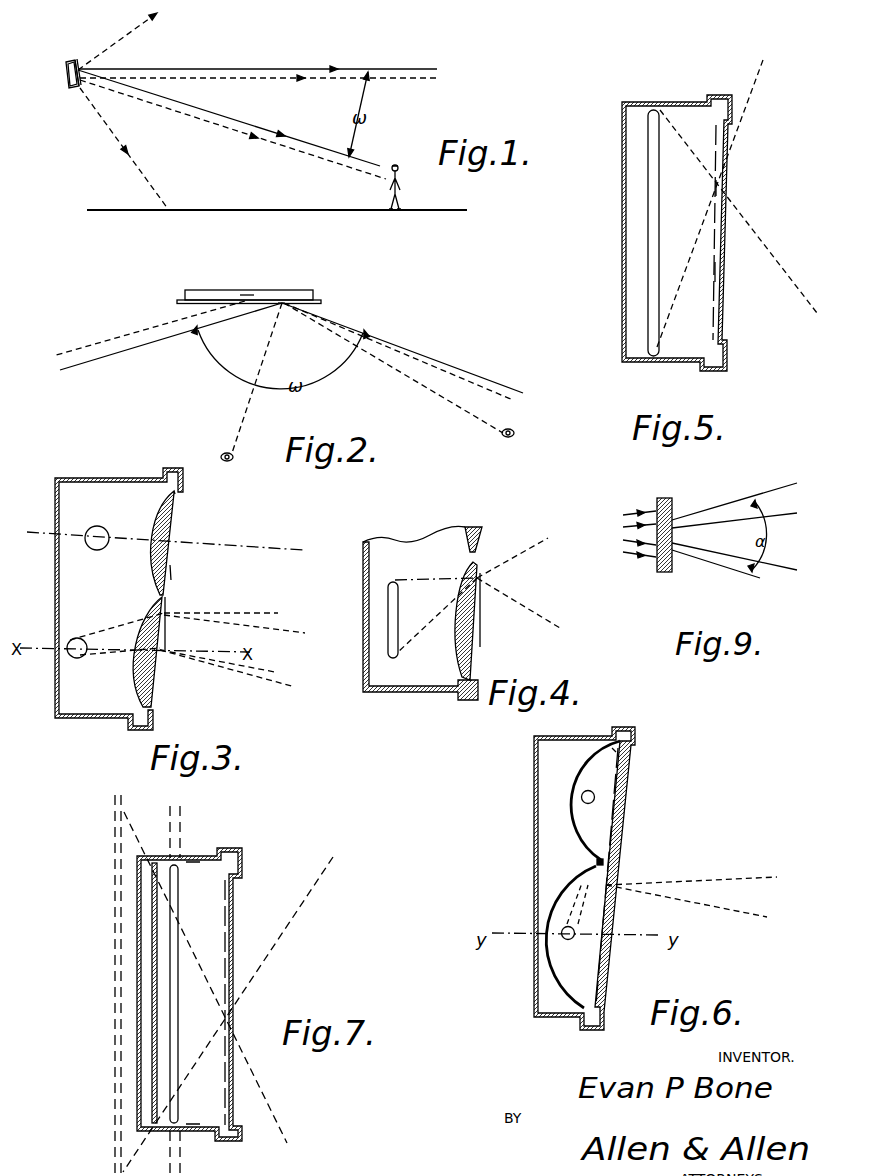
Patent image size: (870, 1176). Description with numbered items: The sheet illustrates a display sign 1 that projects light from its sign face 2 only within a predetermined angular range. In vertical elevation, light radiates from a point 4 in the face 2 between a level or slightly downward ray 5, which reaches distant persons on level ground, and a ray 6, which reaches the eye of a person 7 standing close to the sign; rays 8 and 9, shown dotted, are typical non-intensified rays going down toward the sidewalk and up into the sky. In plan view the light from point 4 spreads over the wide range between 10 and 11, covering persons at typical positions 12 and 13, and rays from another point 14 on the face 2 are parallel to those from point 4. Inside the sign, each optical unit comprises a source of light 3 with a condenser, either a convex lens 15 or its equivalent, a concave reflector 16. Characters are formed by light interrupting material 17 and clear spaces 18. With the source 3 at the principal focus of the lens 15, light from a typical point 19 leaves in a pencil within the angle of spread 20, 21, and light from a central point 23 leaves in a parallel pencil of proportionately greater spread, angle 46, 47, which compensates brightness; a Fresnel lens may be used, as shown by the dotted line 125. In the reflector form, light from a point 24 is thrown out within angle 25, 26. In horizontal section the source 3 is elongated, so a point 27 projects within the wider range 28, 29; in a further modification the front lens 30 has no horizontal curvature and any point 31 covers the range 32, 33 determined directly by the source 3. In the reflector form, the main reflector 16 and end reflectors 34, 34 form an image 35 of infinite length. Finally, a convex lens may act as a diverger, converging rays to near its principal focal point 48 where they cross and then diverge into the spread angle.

In FIG. 1, the sign 1 is at (66, 74).
In FIG. 2, the sign 1 is at (203, 300).
In FIG. 5, the sign 1 is at (677, 233).
In FIG. 3, the sign 1 is at (140, 478).
In FIG. 4, the sign 1 is at (422, 613).
In FIG. 6, the sign 1 is at (534, 843).
In FIG. 7, the sign 1 is at (137, 947).
In FIG. 1, the sign face 2 is at (77, 62).
In FIG. 2, the sign face 2 is at (178, 302).
In FIG. 5, the sign face 2 is at (722, 240).
In FIG. 3, the sign face 2 is at (172, 546).
In FIG. 6, the sign face 2 is at (625, 822).
In FIG. 7, the sign face 2 is at (233, 935).
In FIG. 5, the source of light 3 is at (648, 240).
In FIG. 3, the source of light 3 is at (85, 540).
In FIG. 4, the source of light 3 is at (388, 595).
In FIG. 6, the source of light 3 is at (581, 797).
In FIG. 7, the source of light 3 is at (178, 1018).
In FIG. 1, the point 4 is at (97, 67).
In FIG. 2, the point 4 is at (282, 302).
In FIG. 1, the level ray 5 is at (436, 70).
In FIG. 1, the ray 6 is at (370, 165).
In FIG. 1, the person 7 is at (401, 176).
In FIG. 1, the ray 8 is at (142, 172).
In FIG. 1, the ray 9 is at (142, 30).
In FIG. 2, the range limit 10 is at (438, 348).
In FIG. 2, the range limit 11 is at (95, 367).
In FIG. 2, the position 12 is at (235, 455).
In FIG. 2, the position 13 is at (498, 434).
In FIG. 1, the point 14 is at (80, 85).
In FIG. 2, the point 14 is at (247, 300).
In FIG. 3, the convex lens 15 is at (152, 682).
In FIG. 4, the convex lens 15 is at (480, 620).
In FIG. 6, the concave reflector 16 is at (552, 962).
In FIG. 7, the concave reflector 16 is at (155, 973).
In FIG. 3, the light interrupting material 17 is at (176, 530).
In FIG. 6, the light interrupting material 17 is at (625, 778).
In FIG. 3, the clear spaces 18 is at (178, 505).
In FIG. 6, the clear spaces 18 is at (628, 790).
In FIG. 3, the point 19 is at (167, 612).
In FIG. 3, the angle of spread limit 20 is at (262, 614).
In FIG. 3, the angle of spread limit 21 is at (266, 652).
In FIG. 3, the central point 23 is at (168, 643).
In FIG. 6, the point 24 is at (606, 885).
In FIG. 6, the angle limit 25 is at (750, 877).
In FIG. 6, the angle limit 26 is at (758, 917).
In FIG. 4, the point 27 is at (485, 577).
In FIG. 4, the angular range limit 28 is at (540, 540).
In FIG. 4, the angular range limit 29 is at (556, 626).
In FIG. 5, the front lens 30 is at (724, 272).
In FIG. 5, the point 31 is at (724, 188).
In FIG. 5, the angular range limit 32 is at (765, 107).
In FIG. 5, the angular range limit 33 is at (788, 306).
In FIG. 7, the end reflectors 34 is at (195, 862).
In FIG. 7, the image 35 is at (115, 902).
In FIG. 3, the angle limit 46 is at (247, 629).
In FIG. 3, the angle limit 47 is at (260, 680).
In FIG. 9, the principal focal point 48 is at (700, 530).
In FIG. 3, the Fresnel lens 125 is at (176, 577).